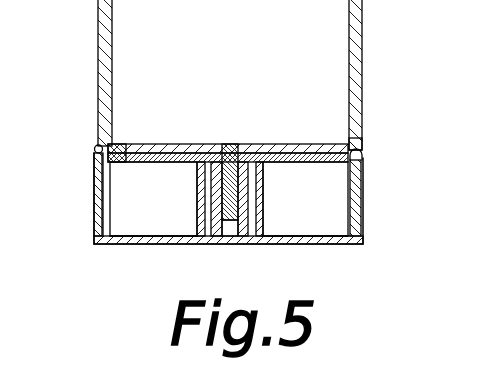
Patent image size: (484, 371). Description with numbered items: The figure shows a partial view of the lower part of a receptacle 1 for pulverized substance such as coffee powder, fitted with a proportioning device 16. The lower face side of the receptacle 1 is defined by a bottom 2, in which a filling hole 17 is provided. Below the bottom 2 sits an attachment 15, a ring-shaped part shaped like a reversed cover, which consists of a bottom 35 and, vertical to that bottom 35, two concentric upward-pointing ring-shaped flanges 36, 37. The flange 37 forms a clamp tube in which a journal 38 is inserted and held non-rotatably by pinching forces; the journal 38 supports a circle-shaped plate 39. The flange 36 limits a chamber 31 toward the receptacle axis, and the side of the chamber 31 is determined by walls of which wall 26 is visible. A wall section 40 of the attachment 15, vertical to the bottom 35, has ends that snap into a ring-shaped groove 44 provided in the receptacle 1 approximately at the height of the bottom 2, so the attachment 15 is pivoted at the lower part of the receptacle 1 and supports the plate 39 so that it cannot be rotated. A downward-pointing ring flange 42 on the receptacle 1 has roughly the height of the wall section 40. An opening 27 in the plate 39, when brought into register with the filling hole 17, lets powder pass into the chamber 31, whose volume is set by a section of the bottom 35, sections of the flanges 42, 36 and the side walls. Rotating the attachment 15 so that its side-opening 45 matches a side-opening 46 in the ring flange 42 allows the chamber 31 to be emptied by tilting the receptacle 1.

The receptacle 1 is at (357, 64).
The bottom 2 is at (305, 144).
The attachment 15 is at (366, 190).
The proportioning device 16 is at (158, 246).
The filling hole 17 is at (177, 152).
The wall 26 is at (169, 213).
The opening 27 is at (140, 160).
The chamber 31 is at (158, 228).
The bottom 35 is at (294, 245).
The flange 36 is at (258, 207).
The flange 37 is at (248, 172).
The journal 38 is at (230, 240).
The plate 39 is at (356, 150).
The wall section 40 is at (363, 172).
The ring flange 42 is at (99, 215).
The ring-shaped groove 44 is at (96, 153).
The side-opening 45 is at (97, 200).
The side-opening 46 is at (355, 213).